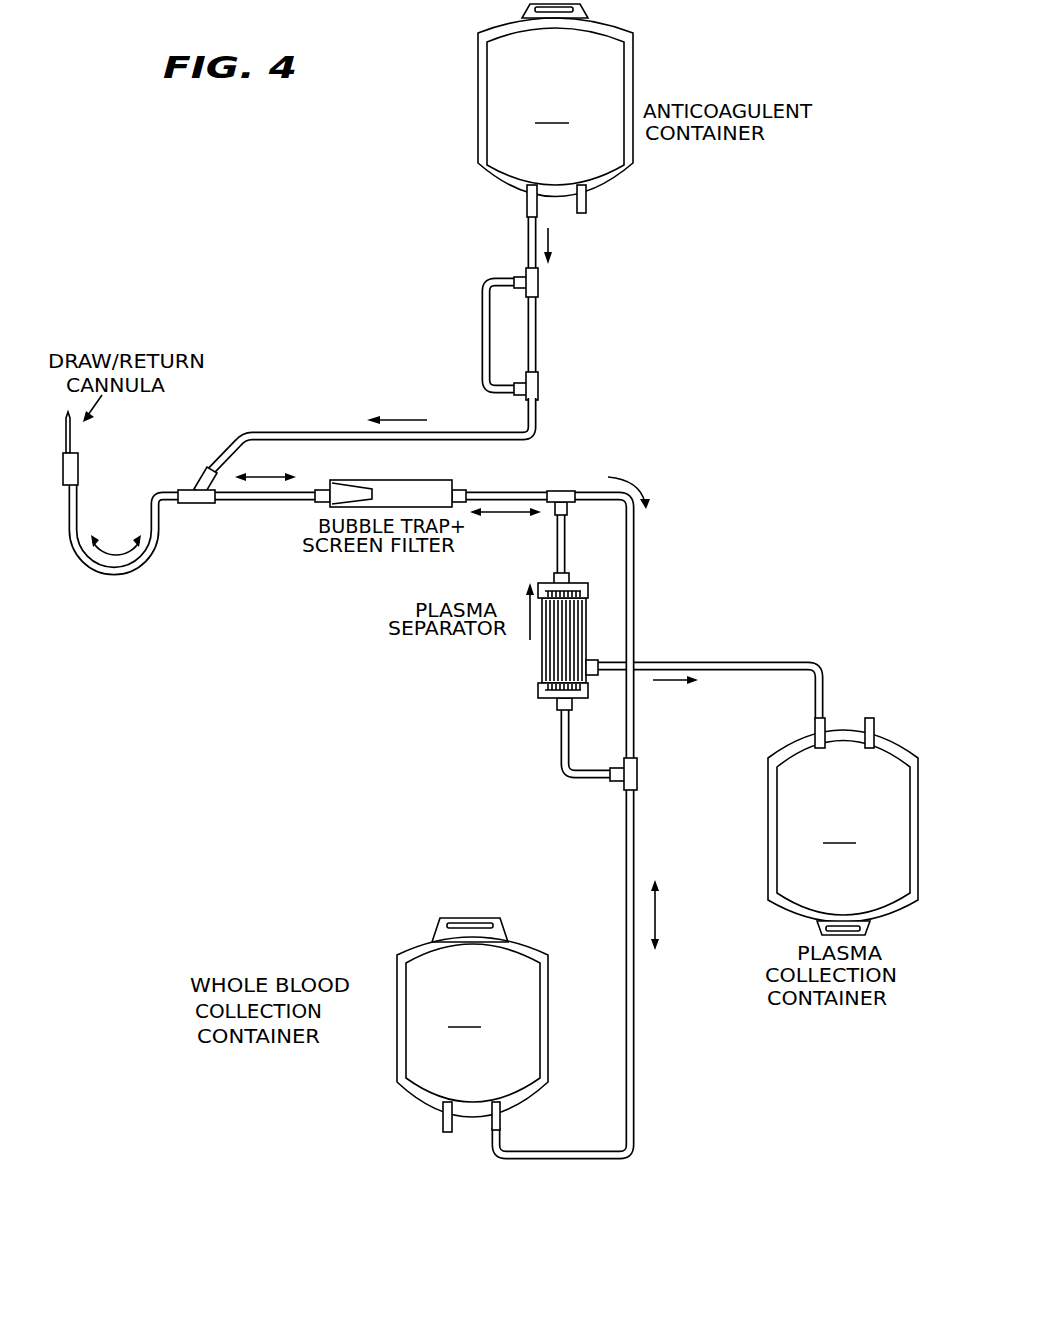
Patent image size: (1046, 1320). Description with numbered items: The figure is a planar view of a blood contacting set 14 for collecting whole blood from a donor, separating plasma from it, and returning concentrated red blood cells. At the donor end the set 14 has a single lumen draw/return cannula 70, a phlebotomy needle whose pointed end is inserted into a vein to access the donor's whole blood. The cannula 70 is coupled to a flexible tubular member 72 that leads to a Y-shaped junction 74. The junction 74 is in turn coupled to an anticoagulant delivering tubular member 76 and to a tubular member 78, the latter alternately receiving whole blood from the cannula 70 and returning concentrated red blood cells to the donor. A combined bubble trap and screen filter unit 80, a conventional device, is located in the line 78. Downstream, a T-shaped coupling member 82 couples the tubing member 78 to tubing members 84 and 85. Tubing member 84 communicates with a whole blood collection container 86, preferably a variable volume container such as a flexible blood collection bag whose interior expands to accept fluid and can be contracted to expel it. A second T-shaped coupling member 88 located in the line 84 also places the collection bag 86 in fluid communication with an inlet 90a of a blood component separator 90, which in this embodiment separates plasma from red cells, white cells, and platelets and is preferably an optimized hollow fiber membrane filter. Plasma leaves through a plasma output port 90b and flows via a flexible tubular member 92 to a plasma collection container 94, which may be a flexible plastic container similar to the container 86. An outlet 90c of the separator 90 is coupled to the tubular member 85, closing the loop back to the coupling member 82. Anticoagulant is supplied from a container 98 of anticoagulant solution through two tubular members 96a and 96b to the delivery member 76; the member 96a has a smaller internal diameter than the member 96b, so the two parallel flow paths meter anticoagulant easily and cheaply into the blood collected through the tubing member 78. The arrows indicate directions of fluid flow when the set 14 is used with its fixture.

The set 14 is at (356, 678).
The draw/return cannula 70 is at (79, 473).
The tubular member 72 is at (126, 572).
The Y-shaped junction 74 is at (193, 504).
The anticoagulant delivering tubular member 76 is at (297, 433).
The tubular member 78 is at (259, 501).
The combined bubble trap and screen filter unit 80 is at (405, 493).
The T-shaped coupling member 82 is at (563, 491).
The tubing member 84 is at (634, 584).
The tubing member 85 is at (565, 545).
The whole blood collection container 86 is at (472, 1025).
The T-shaped coupling member 88 is at (639, 772).
The blood component separator 90 is at (545, 645).
The inlet 90a is at (558, 712).
The plasma output port 90b is at (600, 662).
The outlet 90c is at (556, 578).
The flexible tubular member 92 is at (735, 662).
The plasma collection container 94 is at (843, 826).
The tubular member 96a is at (482, 348).
The tubular member 96b is at (538, 345).
The container of anticoagulant solution 98 is at (555, 110).